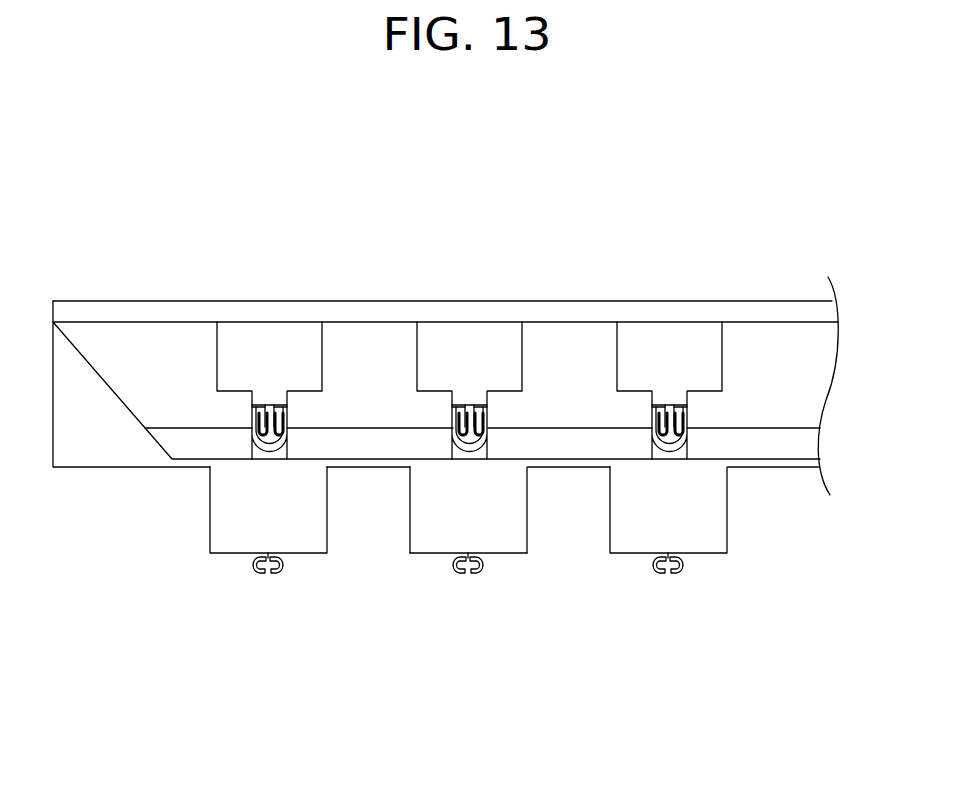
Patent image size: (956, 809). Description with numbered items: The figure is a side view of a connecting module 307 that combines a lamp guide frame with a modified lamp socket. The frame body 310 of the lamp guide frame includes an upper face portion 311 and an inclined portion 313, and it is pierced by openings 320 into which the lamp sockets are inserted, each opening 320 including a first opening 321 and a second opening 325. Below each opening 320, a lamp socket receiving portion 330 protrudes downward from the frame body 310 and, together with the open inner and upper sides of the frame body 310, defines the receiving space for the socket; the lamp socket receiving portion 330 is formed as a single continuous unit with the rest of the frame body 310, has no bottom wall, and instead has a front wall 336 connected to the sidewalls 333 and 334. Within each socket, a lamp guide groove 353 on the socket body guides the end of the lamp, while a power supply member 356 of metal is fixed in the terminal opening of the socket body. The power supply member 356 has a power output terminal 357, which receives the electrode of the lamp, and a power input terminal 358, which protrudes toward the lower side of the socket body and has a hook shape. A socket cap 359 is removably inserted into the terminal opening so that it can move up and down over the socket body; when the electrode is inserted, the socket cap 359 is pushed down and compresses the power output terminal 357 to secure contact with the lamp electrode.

The connecting module 307 is at (430, 172).
The frame body 310 is at (525, 234).
The upper face portion 311 is at (539, 326).
The inclined portion 313 is at (586, 348).
The opening 320 is at (212, 234).
The first opening 321 is at (270, 395).
The second opening 325 is at (218, 353).
The socket cap 359 is at (287, 413).
The lamp socket receiving portion 330 is at (375, 655).
The sidewall 333 is at (410, 528).
The sidewall 334 is at (528, 528).
The front wall 336 is at (448, 530).
The lamp guide groove 353 is at (267, 452).
The power supply member 356 is at (178, 655).
The power output terminal 357 is at (251, 433).
The power input terminal 358 is at (266, 578).